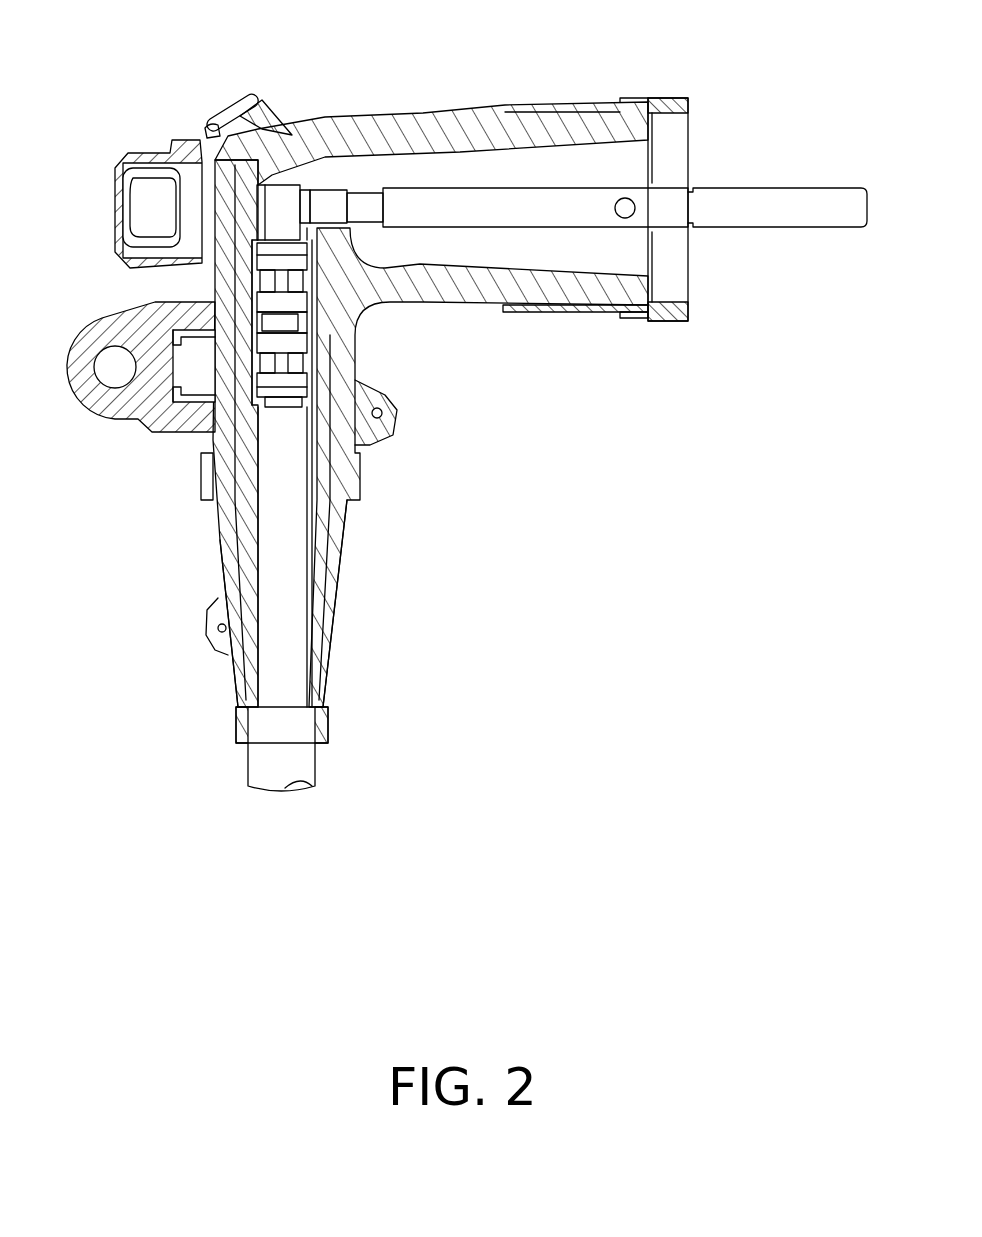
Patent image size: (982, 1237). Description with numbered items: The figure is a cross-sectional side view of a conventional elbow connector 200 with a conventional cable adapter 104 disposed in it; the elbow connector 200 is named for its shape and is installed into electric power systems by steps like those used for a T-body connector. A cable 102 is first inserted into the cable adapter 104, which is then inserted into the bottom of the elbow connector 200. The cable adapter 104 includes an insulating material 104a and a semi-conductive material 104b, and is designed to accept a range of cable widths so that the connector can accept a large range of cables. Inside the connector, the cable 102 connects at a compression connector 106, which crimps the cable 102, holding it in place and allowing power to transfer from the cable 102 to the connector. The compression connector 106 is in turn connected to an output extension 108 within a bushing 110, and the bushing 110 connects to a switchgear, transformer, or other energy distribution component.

The elbow connector 200 is at (153, 33).
The cable 102 is at (293, 606).
The cable adapter 104 is at (355, 714).
The insulating material 104a is at (253, 568).
The semi-conductive material 104b is at (233, 718).
The compression connector 106 is at (283, 343).
The output extension 108 is at (280, 205).
The bushing 110 is at (467, 135).